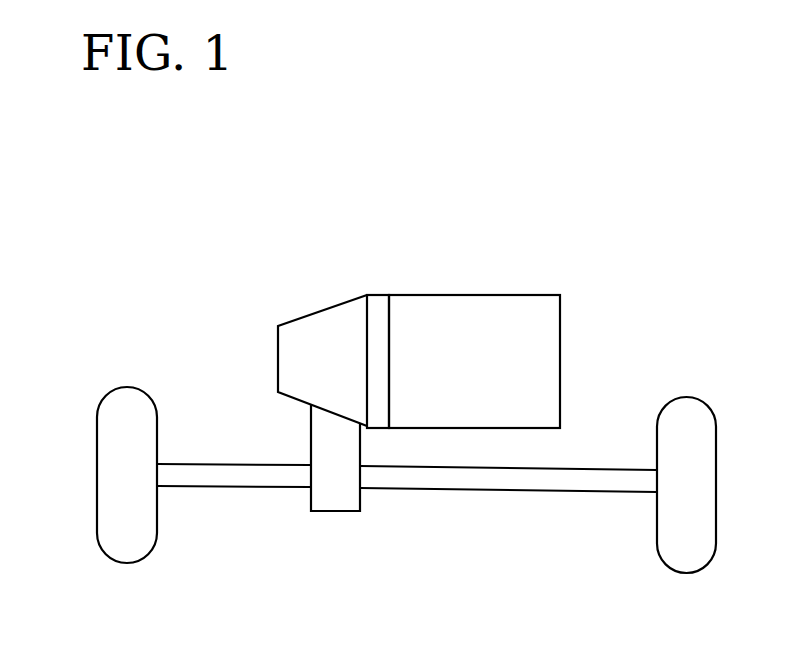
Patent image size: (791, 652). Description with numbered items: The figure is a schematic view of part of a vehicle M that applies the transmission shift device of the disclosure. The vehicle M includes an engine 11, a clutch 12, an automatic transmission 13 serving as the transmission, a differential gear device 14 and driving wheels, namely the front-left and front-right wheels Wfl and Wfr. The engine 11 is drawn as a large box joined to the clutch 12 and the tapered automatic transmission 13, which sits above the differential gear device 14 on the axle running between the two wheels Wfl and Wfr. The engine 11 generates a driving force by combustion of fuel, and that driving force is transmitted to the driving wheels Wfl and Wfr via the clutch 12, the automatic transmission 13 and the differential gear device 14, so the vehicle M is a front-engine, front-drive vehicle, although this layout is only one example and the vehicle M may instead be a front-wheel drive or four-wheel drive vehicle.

The vehicle M is at (557, 199).
The engine 11 is at (452, 295).
The clutch 12 is at (377, 295).
The automatic transmission 13 is at (305, 312).
The differential gear device 14 is at (330, 511).
The front-left wheel Wfl is at (122, 387).
The front-right wheel Wfr is at (683, 397).